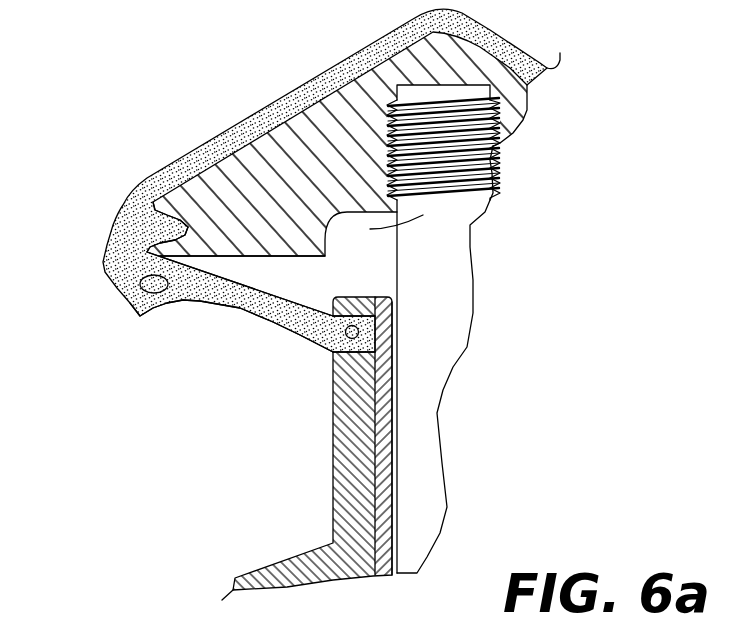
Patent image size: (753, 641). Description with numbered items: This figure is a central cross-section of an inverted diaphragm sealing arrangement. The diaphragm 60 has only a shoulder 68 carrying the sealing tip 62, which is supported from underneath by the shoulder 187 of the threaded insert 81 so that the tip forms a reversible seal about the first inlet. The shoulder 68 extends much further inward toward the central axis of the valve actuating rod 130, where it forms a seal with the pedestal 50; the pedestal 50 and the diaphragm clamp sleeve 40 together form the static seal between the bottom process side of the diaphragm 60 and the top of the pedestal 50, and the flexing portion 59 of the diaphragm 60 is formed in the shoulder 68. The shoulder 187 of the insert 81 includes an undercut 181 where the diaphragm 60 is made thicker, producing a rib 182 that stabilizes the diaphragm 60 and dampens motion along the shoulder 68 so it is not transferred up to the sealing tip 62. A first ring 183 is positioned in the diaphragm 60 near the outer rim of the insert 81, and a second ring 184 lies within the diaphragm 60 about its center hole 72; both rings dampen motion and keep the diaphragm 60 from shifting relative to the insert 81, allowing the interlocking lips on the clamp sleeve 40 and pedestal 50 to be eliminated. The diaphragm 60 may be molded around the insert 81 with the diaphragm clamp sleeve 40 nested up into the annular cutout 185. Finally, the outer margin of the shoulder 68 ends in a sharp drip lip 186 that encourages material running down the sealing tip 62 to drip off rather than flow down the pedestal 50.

The diaphragm clamp sleeve 40 is at (380, 442).
The pedestal 50 is at (353, 460).
The flexing portion 59 is at (237, 298).
The diaphragm 60 is at (273, 323).
The sealing tip 62 is at (281, 107).
The shoulder 68 is at (330, 350).
The center hole 72 is at (359, 332).
The insert 81 is at (347, 93).
The valve actuating rod 130 is at (445, 235).
The undercut 181 is at (220, 258).
The rib 182 is at (189, 195).
The first ring 183 is at (165, 293).
The second ring 184 is at (357, 298).
The annular cutout 185 is at (403, 212).
The drip lip 186 is at (139, 316).
The shoulder of the insert 187 is at (198, 204).